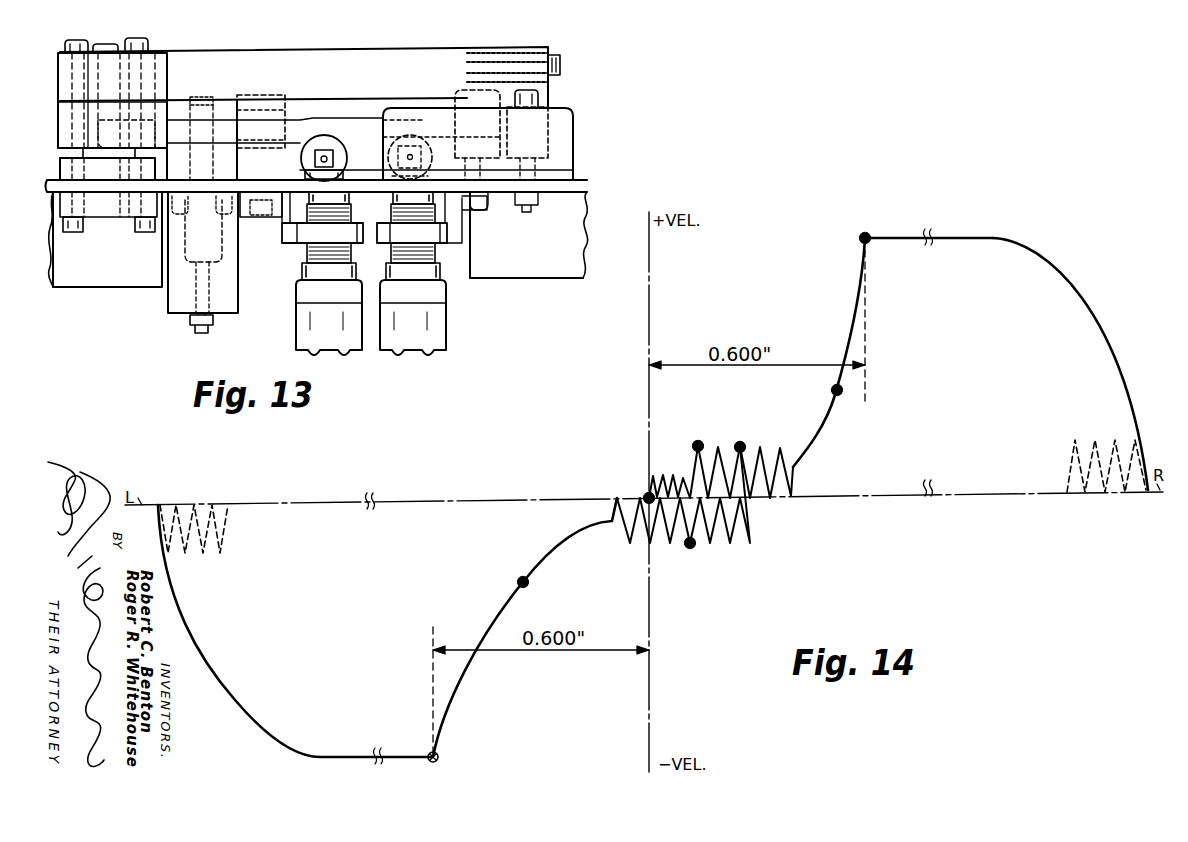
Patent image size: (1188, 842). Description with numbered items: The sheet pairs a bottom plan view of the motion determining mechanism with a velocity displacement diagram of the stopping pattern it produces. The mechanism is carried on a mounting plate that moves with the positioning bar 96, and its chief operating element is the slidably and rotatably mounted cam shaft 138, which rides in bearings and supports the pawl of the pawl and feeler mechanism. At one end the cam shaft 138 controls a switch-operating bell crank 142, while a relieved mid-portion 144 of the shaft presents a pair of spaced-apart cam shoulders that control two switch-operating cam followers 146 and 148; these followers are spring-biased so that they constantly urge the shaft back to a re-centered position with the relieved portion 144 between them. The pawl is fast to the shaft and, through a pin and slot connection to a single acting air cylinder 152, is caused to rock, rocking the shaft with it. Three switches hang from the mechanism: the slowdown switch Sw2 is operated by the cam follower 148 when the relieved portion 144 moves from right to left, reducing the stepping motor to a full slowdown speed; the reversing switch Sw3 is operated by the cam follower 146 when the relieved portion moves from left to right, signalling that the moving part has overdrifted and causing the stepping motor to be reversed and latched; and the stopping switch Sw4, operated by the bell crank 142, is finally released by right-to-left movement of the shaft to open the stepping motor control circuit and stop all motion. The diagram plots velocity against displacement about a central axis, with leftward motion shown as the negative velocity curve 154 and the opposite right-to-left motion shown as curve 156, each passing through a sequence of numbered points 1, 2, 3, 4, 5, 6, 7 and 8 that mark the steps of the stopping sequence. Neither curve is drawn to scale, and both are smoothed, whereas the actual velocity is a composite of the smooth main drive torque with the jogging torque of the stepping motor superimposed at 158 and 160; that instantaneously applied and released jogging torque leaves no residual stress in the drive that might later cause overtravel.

In FIG. 13, the positioning bar 96 is at (75, 282).
In FIG. 13, the cam shaft 138 is at (220, 118).
In FIG. 13, the switch-operating bell crank 142 is at (514, 54).
In FIG. 13, the relieved mid-portion 144 is at (346, 118).
In FIG. 13, the cam follower 146 is at (341, 143).
In FIG. 13, the cam follower 148 is at (388, 153).
In FIG. 13, the single acting air cylinder 152 is at (172, 303).
In FIG. 14, the negative velocity curve 154 is at (249, 723).
In FIG. 14, the velocity curve 156 is at (893, 236).
In FIG. 14, the jogging torque superposition 158 is at (199, 505).
In FIG. 14, the jogging torque superposition 160 is at (1070, 450).
In FIG. 14, the curve point 1 is at (440, 755).
In FIG. 14, the curve point 2 is at (530, 585).
In FIG. 14, the curve point 3 is at (690, 548).
In FIG. 14, the curve point 4 is at (741, 442).
In FIG. 14, the curve point 5 is at (699, 441).
In FIG. 14, the curve point 6 is at (647, 494).
In FIG. 14, the curve point 7 is at (859, 238).
In FIG. 14, the curve point 8 is at (831, 390).
In FIG. 13, the slowdown switch Sw2 is at (448, 335).
In FIG. 13, the reversing switch Sw3 is at (294, 335).
In FIG. 13, the stopping switch Sw4 is at (573, 112).